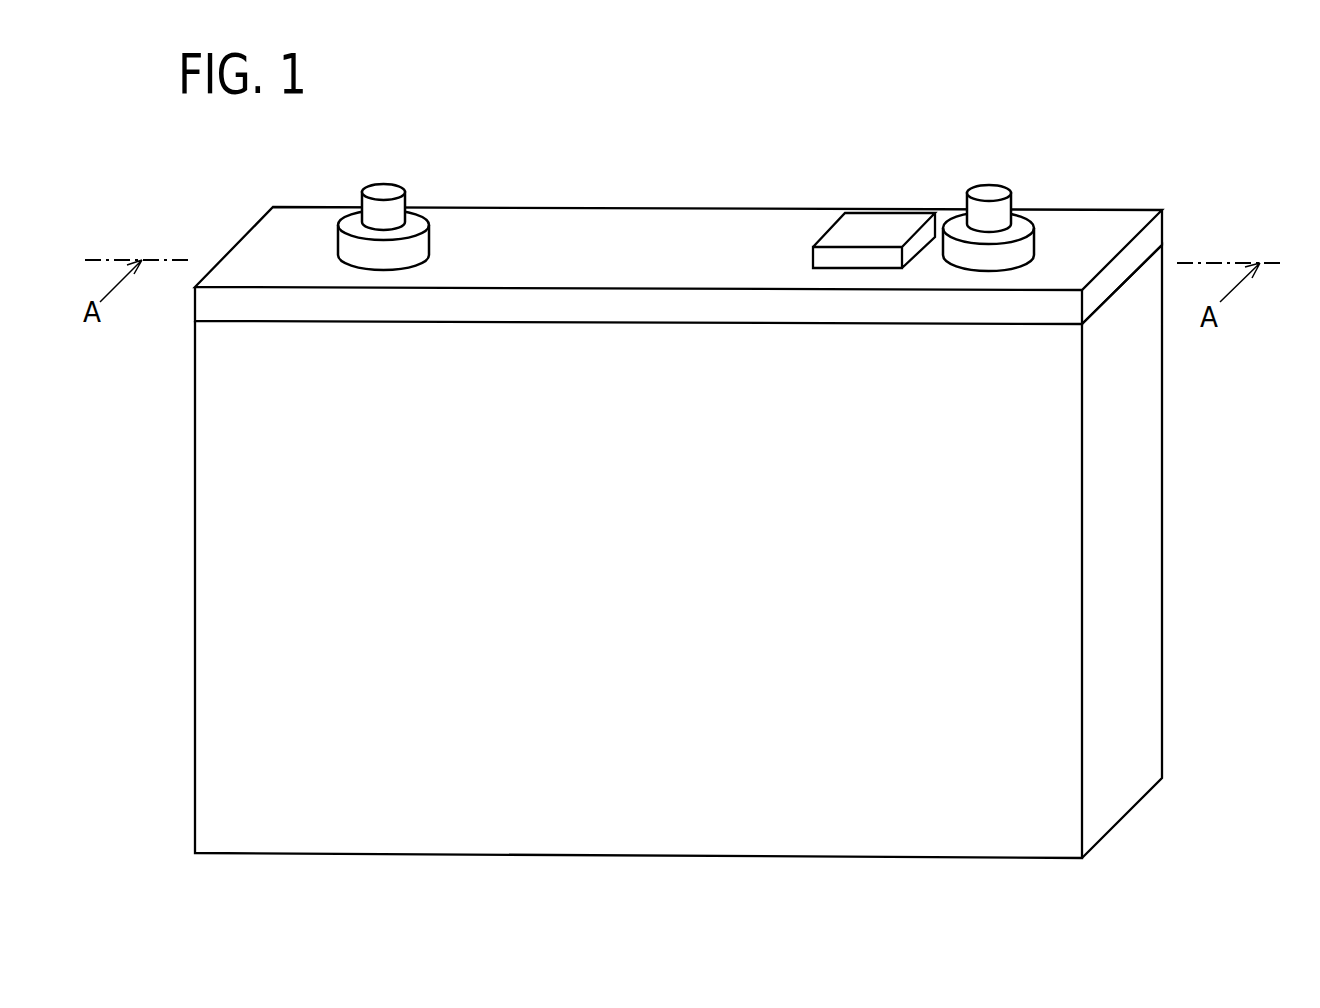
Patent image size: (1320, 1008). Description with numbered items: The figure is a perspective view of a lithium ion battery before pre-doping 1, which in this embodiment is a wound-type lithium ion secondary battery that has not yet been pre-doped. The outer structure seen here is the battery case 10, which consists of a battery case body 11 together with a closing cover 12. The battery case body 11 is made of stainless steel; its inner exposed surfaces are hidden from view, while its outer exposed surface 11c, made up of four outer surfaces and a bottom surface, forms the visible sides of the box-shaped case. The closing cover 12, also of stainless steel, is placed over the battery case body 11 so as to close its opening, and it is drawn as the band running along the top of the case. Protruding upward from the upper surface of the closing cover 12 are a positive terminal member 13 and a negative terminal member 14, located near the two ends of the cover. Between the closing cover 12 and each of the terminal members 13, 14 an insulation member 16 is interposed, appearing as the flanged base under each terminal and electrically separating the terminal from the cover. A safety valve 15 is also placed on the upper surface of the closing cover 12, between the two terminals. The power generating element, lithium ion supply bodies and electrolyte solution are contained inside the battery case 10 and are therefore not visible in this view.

The lithium ion battery before pre-doping 1 is at (738, 162).
The battery case 10 is at (1253, 405).
The battery case body 11 is at (1062, 478).
The outer exposed surface 11c is at (1150, 563).
The closing cover 12 is at (1050, 313).
The positive terminal member 13 is at (383, 191).
The negative terminal member 14 is at (985, 192).
The safety valve 15 is at (873, 220).
The insulation member 16 is at (418, 223).